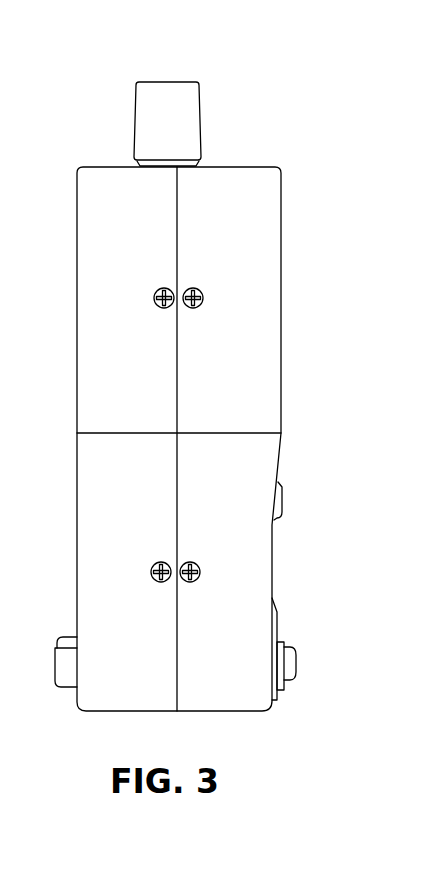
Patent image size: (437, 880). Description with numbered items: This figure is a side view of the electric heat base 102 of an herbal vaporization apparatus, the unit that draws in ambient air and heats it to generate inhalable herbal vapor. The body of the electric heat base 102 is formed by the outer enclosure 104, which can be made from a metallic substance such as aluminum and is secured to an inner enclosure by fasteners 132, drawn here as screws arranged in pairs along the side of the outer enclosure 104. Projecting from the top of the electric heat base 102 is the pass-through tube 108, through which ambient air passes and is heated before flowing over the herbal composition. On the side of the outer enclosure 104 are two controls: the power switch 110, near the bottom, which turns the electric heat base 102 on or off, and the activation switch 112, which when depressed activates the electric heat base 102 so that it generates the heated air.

The electric heat base 102 is at (333, 116).
The outer enclosure 104 is at (283, 207).
The pass-through tube 108 is at (200, 112).
The power switch 110 is at (296, 660).
The activation switch 112 is at (280, 484).
The fasteners 132 is at (200, 572).